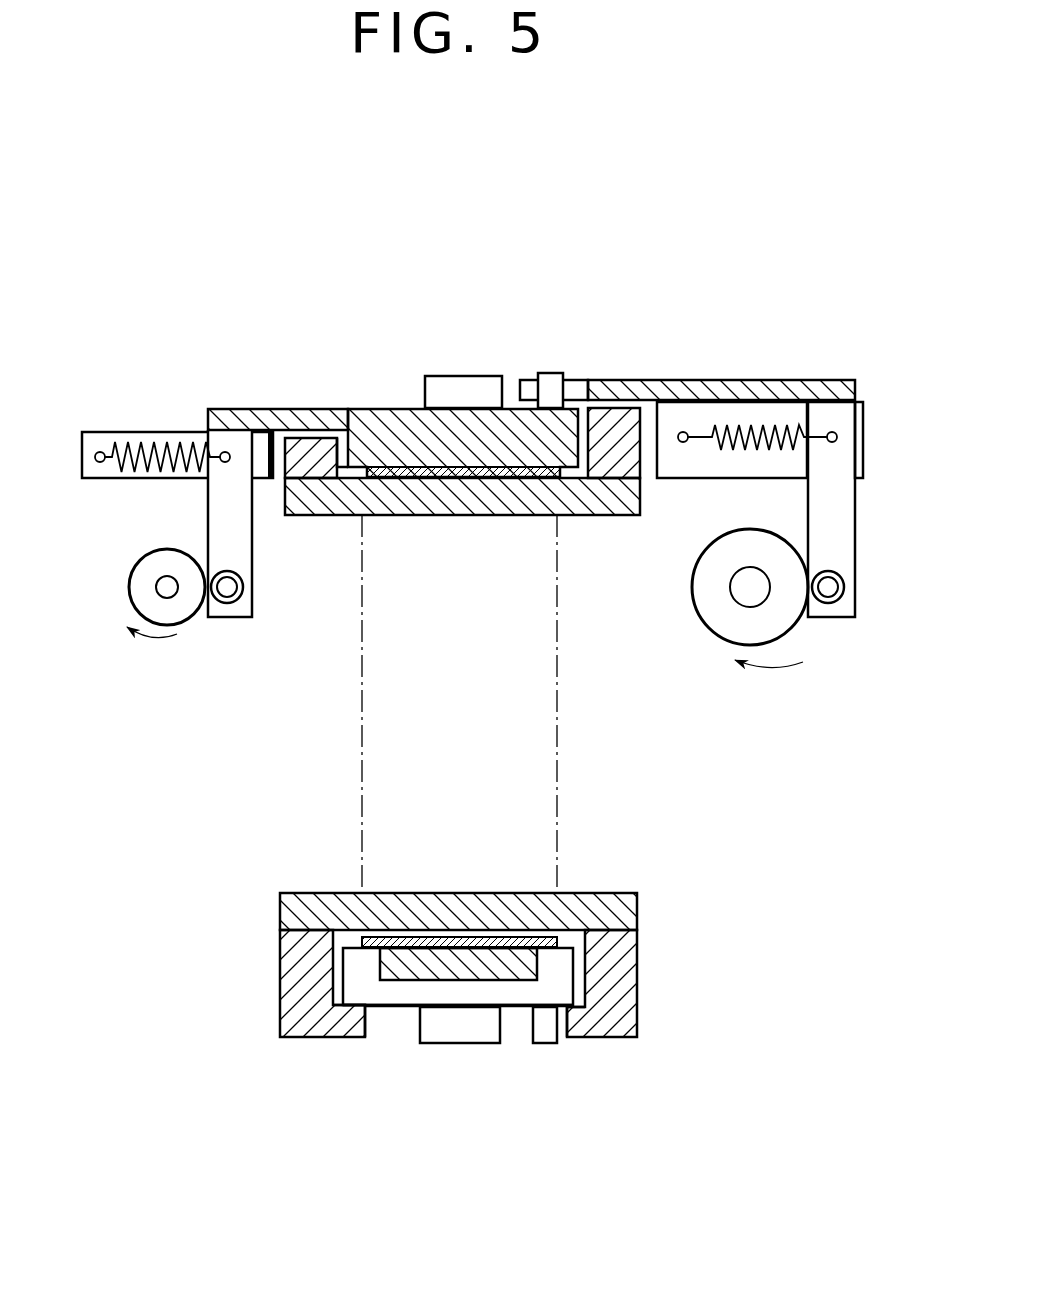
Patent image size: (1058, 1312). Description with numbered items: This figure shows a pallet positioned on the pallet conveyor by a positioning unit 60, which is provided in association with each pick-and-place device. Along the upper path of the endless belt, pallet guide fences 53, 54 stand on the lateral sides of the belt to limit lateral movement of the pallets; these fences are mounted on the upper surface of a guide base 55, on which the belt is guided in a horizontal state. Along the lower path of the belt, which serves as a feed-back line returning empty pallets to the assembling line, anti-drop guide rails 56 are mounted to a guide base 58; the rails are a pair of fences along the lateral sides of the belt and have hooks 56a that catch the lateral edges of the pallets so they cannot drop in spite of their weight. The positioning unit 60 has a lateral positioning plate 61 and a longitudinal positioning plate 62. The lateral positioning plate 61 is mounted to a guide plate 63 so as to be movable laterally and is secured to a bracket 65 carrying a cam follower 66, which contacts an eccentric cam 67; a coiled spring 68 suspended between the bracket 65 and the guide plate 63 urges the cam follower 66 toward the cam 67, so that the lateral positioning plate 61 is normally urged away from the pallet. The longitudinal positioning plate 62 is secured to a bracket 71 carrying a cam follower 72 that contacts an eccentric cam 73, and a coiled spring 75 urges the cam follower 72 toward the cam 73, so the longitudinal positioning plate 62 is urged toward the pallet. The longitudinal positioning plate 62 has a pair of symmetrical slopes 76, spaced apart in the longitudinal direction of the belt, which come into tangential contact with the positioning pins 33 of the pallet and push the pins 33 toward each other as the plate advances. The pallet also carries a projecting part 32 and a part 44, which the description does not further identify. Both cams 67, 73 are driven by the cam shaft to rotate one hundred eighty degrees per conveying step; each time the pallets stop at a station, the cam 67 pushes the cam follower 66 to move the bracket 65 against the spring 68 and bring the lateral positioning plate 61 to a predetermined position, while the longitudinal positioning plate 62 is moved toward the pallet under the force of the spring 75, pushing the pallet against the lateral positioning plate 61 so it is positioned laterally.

The projection 32 is at (458, 387).
The positioning pins 33 is at (548, 380).
The support block 44 is at (410, 975).
The pallet guide fence 53 is at (322, 420).
The pallet guide fence 54 is at (637, 462).
The guide base 55 is at (390, 507).
The anti-drop guide rails 56 is at (290, 992).
The hooks 56a is at (352, 1023).
The guide base 58 is at (593, 900).
The positioning unit 60 is at (583, 262).
The lateral positioning plate 61 is at (326, 443).
The longitudinal positioning plate 62 is at (745, 350).
The guide plate 63 is at (93, 438).
The bracket 65 is at (245, 560).
The cam follower 66 is at (227, 590).
The eccentric cam 67 is at (153, 563).
The coiled spring 68 is at (303, 377).
The bracket 71 is at (847, 522).
The cam follower 72 is at (827, 590).
The eccentric cam 73 is at (697, 595).
The coiled spring 75 is at (723, 445).
The symmetrical slopes 76 is at (573, 388).